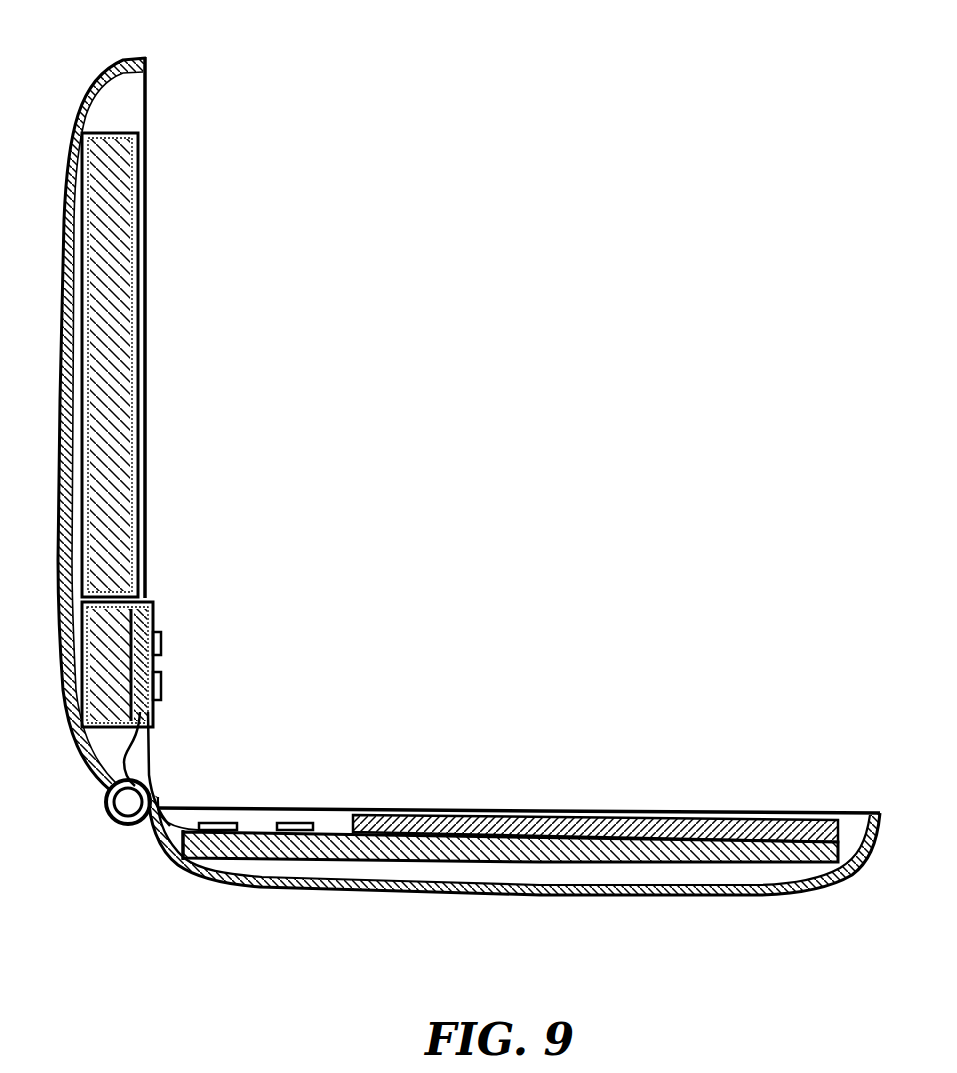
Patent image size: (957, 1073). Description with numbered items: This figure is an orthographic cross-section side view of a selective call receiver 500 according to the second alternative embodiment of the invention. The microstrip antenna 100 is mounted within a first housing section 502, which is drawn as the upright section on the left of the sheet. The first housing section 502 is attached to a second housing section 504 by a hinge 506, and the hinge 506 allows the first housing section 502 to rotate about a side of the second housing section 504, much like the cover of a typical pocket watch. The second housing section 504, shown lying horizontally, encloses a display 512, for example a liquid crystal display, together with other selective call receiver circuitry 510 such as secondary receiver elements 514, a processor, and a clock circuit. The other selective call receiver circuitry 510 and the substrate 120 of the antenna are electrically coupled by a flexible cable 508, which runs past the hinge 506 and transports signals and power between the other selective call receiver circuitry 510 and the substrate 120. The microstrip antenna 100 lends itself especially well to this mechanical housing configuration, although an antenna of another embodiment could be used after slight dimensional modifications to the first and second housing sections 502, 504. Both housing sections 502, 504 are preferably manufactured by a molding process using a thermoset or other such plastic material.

The selective call receiver 500 is at (503, 1000).
The first housing section 502 is at (137, 58).
The second housing section 504 is at (305, 888).
The hinge 506 is at (123, 826).
The flexible cable 508 is at (168, 853).
The other selective call receiver circuitry 510 is at (275, 828).
The display 512 is at (353, 822).
The secondary receiver elements 514 is at (220, 824).
The microstrip antenna 100 is at (112, 133).
The substrate 120 is at (152, 665).